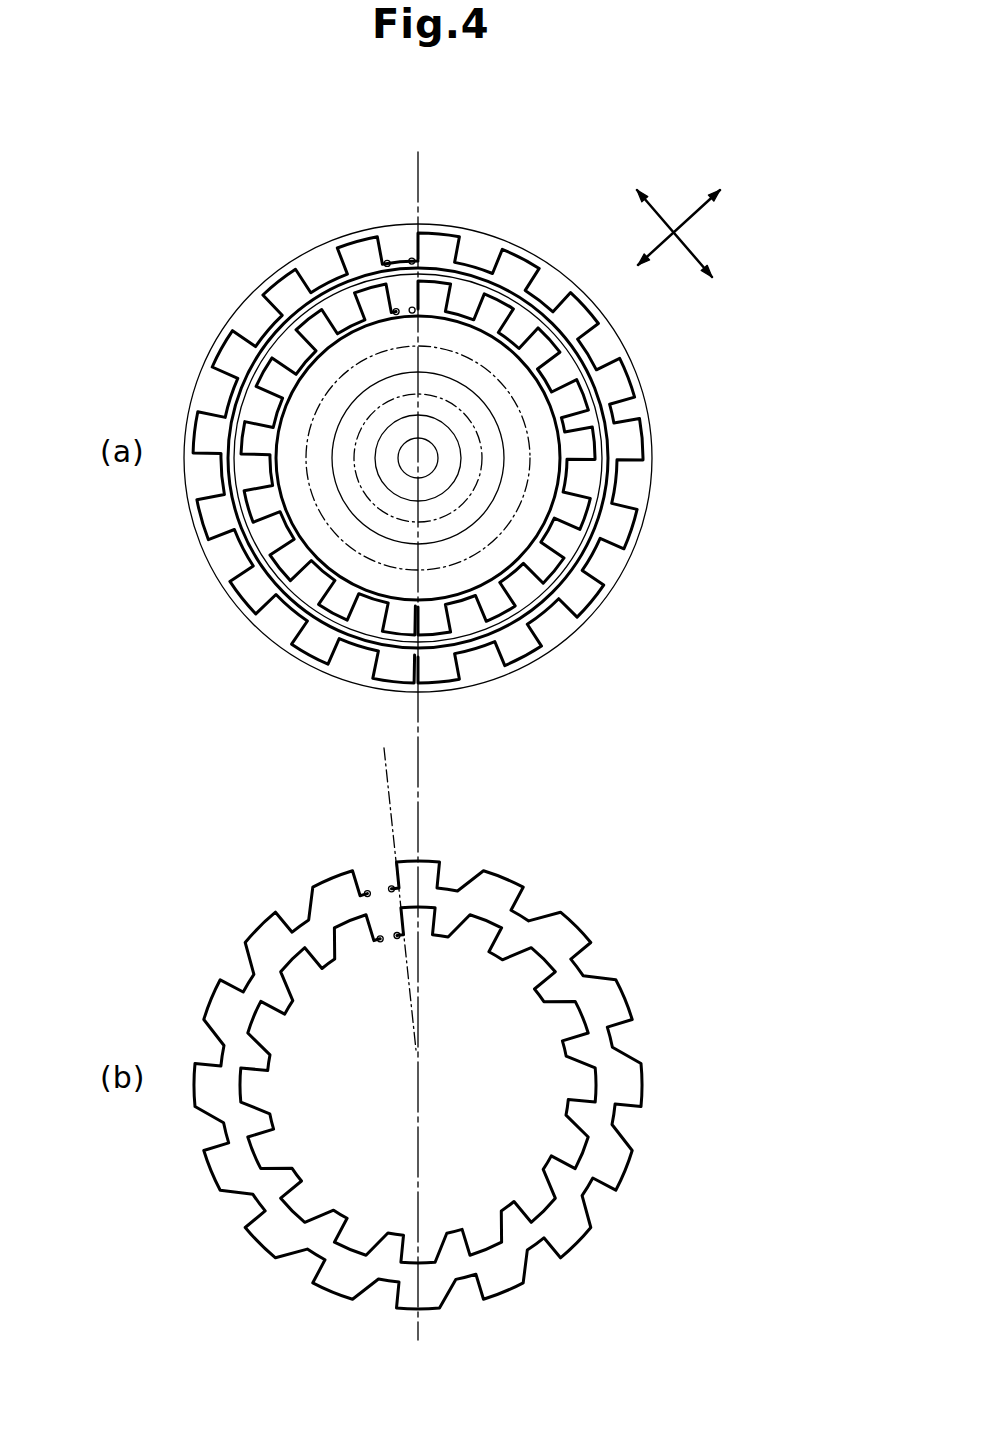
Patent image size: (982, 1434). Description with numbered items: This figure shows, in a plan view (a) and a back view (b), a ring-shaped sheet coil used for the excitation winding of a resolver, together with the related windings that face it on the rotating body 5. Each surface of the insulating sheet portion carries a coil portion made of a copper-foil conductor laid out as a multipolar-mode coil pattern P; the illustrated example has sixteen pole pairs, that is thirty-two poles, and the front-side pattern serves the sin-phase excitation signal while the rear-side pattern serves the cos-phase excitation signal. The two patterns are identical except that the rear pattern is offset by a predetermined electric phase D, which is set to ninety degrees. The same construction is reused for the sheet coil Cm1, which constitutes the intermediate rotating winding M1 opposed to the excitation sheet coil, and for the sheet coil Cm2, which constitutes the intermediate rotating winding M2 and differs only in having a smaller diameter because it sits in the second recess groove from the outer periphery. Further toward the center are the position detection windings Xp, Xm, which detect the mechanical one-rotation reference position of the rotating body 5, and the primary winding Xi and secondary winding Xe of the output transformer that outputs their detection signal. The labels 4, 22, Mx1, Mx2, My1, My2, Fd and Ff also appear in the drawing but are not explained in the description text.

The ring member 4 is at (559, 150).
The rotating body 5 is at (507, 183).
The rotation axis 22 is at (432, 444).
The multipolar-mode coil pattern P is at (428, 679).
The intermediate rotating winding M1 is at (423, 485).
The intermediate rotating winding M2 is at (494, 492).
The half ring of x-direction pair Mx1 is at (580, 547).
The half ring of x-direction pair Mx2 is at (598, 473).
The half ring of y-direction pair My1 is at (645, 972).
The half ring of y-direction pair My2 is at (638, 1058).
The sheet coil Cm1 is at (211, 578).
The sheet coil Cm2 is at (500, 629).
The position detection winding Xp is at (377, 371).
The position detection winding Xm is at (342, 373).
The secondary winding Xe is at (307, 389).
The primary winding Xi is at (353, 440).
The force direction Fd is at (693, 212).
The force direction Ff is at (693, 242).
The electric phase D is at (330, 806).